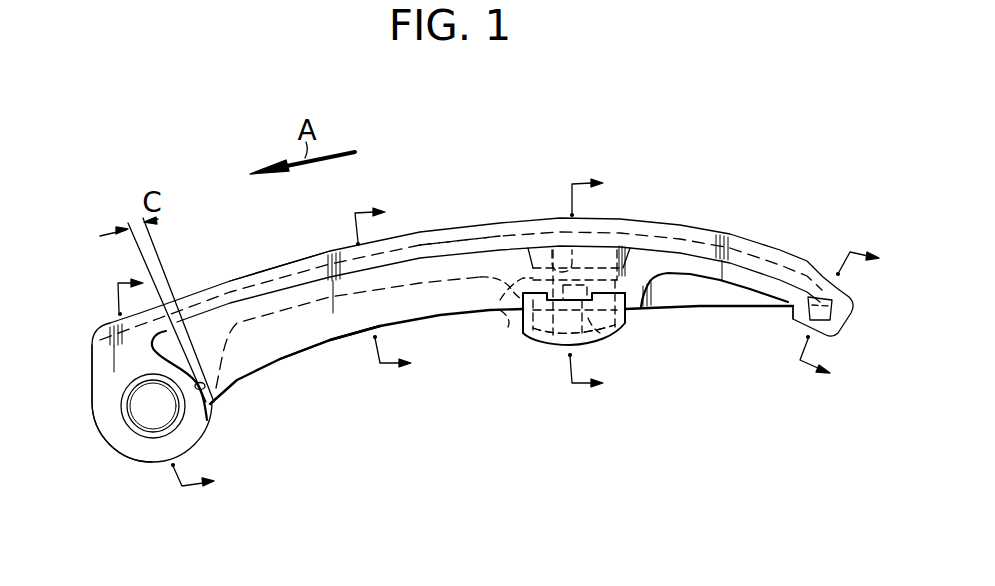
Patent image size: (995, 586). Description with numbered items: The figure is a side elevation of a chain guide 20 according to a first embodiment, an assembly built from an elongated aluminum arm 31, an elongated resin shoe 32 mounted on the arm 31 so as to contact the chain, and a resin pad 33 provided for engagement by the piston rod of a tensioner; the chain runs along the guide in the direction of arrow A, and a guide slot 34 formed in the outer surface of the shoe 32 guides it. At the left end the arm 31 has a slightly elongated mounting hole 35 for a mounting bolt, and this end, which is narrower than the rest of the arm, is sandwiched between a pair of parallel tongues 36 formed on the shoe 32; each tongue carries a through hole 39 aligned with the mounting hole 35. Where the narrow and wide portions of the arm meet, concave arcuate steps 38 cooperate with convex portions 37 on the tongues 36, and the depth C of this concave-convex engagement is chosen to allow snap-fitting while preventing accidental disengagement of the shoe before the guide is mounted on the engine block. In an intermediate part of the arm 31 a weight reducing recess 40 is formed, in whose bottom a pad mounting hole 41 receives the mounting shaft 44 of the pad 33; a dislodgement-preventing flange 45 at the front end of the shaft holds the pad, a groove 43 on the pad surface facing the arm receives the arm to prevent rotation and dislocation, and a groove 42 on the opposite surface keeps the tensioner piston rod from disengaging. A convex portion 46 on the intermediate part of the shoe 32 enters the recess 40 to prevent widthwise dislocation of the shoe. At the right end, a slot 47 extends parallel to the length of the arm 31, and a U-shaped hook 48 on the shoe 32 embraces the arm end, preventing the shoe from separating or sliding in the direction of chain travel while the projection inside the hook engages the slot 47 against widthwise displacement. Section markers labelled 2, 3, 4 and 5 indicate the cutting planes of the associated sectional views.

The chain guide 20 is at (649, 176).
The arm 31 is at (336, 345).
The shoe 32 is at (255, 273).
The pad 33 is at (523, 333).
The guide slot 34 is at (434, 244).
The mounting hole 35 is at (146, 428).
The tongues 36 is at (97, 410).
The convex portions 37 is at (209, 406).
The steps 38 is at (200, 384).
The through hole 39 is at (132, 422).
The weight reducing recess 40 is at (617, 250).
The pad mounting hole 41 is at (626, 321).
The groove 42 is at (597, 345).
The groove 43 is at (515, 312).
The mounting shaft 44 is at (551, 338).
The dislodgement-preventing flange 45 is at (498, 294).
The convex portion 46 is at (552, 250).
The slot 47 is at (840, 322).
The U-shaped hook 48 is at (793, 316).
The section line 2- 2 is at (155, 385).
The section line 3- 3 is at (376, 292).
The section line 4- 4 is at (582, 286).
The section line 5- 5 is at (831, 305).